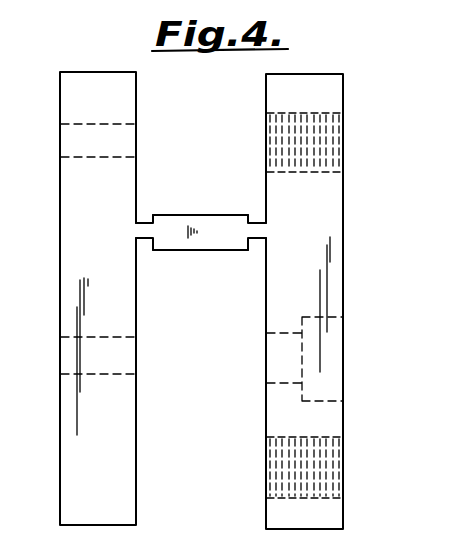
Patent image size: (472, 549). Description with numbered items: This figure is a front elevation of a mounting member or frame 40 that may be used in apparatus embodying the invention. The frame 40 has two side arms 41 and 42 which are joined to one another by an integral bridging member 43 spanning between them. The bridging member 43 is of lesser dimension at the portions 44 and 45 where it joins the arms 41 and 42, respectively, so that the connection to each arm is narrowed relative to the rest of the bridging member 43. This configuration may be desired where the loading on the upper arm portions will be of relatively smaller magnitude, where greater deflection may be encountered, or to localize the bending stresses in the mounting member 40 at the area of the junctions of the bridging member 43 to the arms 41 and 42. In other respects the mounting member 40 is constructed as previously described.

The mounting member or frame 40 is at (239, 284).
The side arm 41 is at (64, 307).
The side arm 42 is at (331, 297).
The integral bridging member 43 is at (204, 222).
The portion of lesser dimension 44 is at (146, 222).
The portion of lesser dimension 45 is at (254, 222).